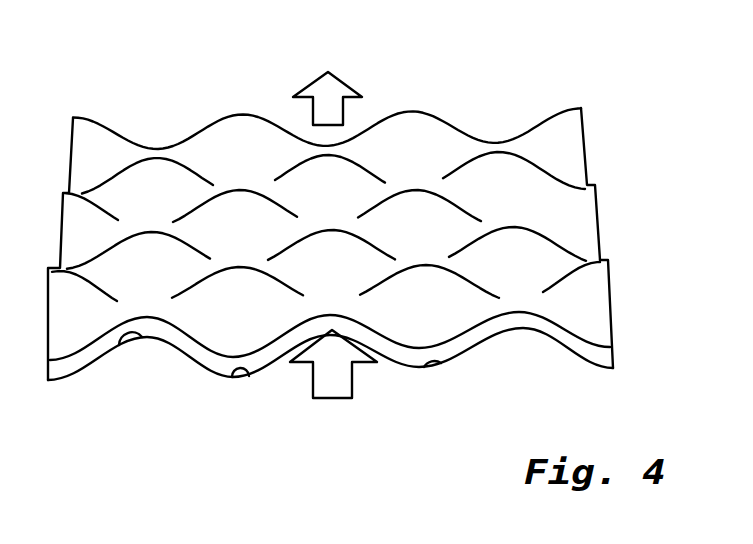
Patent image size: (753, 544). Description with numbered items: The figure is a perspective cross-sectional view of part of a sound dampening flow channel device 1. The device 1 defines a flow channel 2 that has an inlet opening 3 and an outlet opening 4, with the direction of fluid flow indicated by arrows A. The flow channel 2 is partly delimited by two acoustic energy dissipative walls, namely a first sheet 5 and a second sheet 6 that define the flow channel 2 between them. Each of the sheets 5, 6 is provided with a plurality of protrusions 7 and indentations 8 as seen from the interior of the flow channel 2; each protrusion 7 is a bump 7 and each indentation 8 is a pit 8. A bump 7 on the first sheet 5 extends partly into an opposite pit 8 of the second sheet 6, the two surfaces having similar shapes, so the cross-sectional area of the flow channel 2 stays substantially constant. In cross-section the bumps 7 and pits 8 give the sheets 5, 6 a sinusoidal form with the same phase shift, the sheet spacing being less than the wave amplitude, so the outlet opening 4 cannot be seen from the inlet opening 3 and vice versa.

The sound dampening flow channel device 1 is at (332, 88).
The flow channel 2 is at (517, 328).
The inlet opening 3 is at (203, 368).
The outlet opening 4 is at (248, 115).
The first sheet 5 is at (576, 145).
The second sheet 6 is at (589, 355).
The protrusion 7 is at (148, 210).
The indentation 8 is at (240, 190).